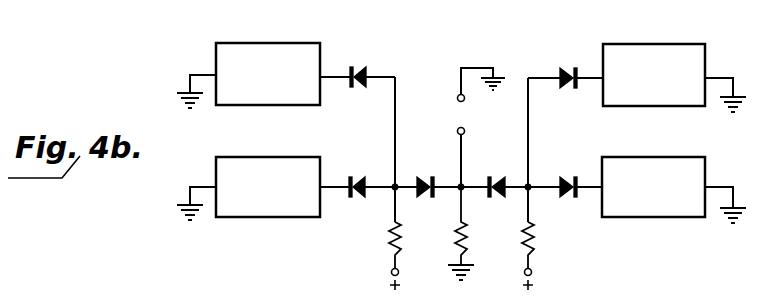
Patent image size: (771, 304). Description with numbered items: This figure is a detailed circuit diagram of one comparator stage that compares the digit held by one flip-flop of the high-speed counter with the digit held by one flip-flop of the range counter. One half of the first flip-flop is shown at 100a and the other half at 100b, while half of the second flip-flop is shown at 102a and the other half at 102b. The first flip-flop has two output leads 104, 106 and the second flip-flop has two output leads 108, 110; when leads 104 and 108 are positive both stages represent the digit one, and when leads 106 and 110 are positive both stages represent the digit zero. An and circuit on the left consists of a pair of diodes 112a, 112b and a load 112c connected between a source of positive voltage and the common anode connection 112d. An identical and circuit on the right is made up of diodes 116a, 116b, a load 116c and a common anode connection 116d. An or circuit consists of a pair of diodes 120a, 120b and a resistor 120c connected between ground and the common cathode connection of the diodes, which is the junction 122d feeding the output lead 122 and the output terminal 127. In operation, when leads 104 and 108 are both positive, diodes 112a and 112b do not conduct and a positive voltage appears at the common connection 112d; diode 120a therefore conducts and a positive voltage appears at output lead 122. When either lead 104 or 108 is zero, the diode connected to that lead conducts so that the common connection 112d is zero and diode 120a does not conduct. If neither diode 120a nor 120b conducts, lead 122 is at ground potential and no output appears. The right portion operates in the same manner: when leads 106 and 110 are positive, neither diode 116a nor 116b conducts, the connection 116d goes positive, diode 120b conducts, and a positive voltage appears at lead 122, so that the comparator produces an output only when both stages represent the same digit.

The half of flip-flop 100a is at (281, 30).
The other half of flip-flop 100b is at (680, 33).
The half of flip-flop 102a is at (290, 135).
The other half of flip-flop 102b is at (703, 140).
The output lead 104 is at (334, 74).
The output lead 106 is at (589, 75).
The output lead 108 is at (333, 178).
The output lead 110 is at (585, 176).
The diode 112a is at (362, 70).
The diode 112b is at (357, 197).
The load 112c is at (384, 240).
The common anode connection 112d is at (394, 186).
The diode 116a is at (567, 66).
The diode 116b is at (560, 197).
The load 116c is at (534, 241).
The common anode connection 116d is at (531, 185).
The diode 120a is at (421, 200).
The diode 120b is at (492, 198).
The resistor 120c is at (456, 243).
The output lead 122 is at (459, 157).
The output junction 122d is at (464, 185).
The output terminal 127 is at (458, 131).